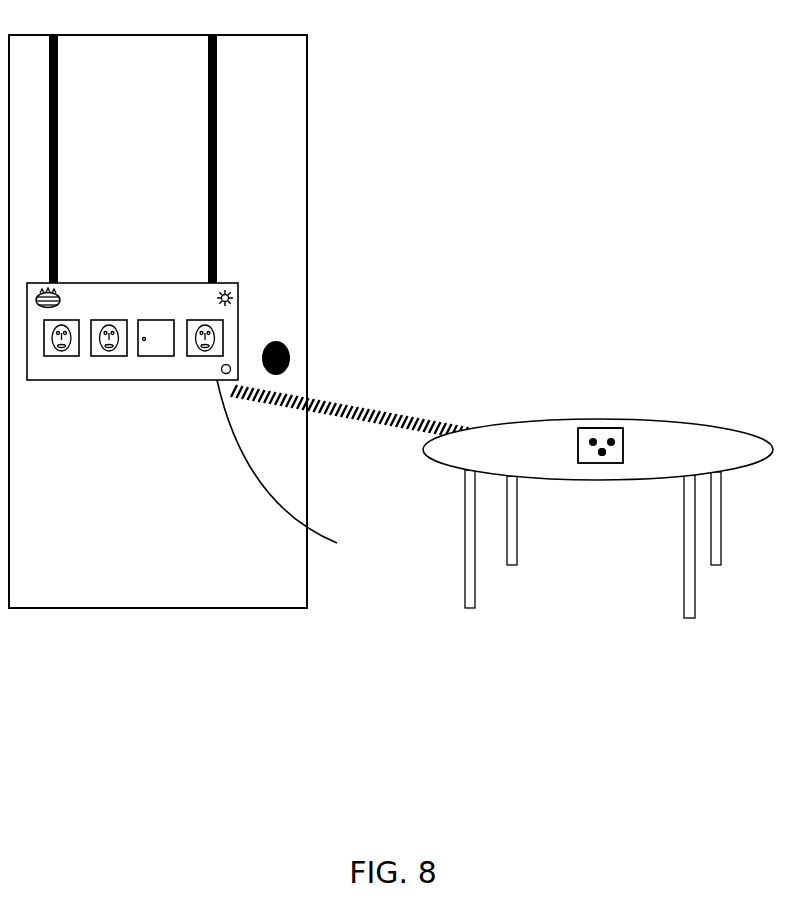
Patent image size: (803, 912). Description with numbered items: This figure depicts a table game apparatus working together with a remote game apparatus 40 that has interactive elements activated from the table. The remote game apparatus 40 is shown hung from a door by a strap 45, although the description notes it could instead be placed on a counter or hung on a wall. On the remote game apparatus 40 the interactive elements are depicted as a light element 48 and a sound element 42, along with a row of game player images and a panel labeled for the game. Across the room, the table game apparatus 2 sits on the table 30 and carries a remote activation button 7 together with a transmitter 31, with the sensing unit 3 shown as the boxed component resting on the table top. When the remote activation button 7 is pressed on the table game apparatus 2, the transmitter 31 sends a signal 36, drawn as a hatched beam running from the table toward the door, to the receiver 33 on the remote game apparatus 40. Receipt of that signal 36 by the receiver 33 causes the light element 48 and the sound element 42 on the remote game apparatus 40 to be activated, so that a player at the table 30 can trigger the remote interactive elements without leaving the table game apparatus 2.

The hanging strap 45 is at (217, 103).
The sound element 42 is at (60, 292).
The light element 48 is at (233, 287).
The remote game apparatus 40 is at (256, 289).
The signal 36 is at (380, 386).
The receiver 33 is at (293, 474).
The table 30 is at (436, 473).
The sensor unit 3 is at (585, 428).
The table game apparatus 2 is at (614, 405).
The remote activation button 7 is at (622, 428).
The transmitter 31 is at (583, 463).